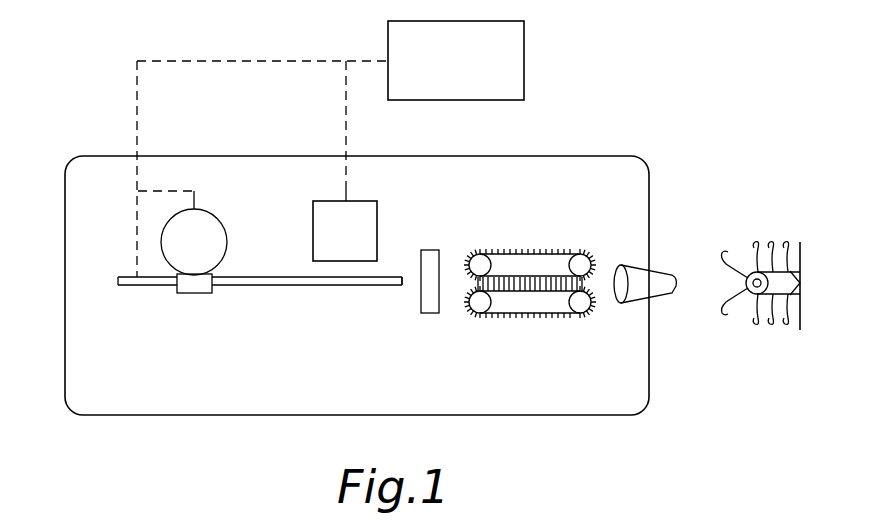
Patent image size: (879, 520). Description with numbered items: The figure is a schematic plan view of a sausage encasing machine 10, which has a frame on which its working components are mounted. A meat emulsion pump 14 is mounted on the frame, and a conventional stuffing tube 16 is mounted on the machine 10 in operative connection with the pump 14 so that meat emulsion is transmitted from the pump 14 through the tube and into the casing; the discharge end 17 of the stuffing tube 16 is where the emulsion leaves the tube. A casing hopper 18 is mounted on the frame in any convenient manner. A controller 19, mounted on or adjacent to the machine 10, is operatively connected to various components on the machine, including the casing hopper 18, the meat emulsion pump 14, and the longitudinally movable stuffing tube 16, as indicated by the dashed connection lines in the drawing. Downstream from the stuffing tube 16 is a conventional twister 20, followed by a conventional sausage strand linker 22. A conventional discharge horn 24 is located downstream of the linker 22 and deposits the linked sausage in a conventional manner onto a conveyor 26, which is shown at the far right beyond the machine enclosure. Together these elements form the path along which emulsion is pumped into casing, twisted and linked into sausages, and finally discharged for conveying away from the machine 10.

The sausage encasing machine 10 is at (62, 94).
The meat emulsion pump 14 is at (222, 215).
The stuffing tube 16 is at (272, 286).
The discharge end of the tube 17 is at (404, 281).
The casing hopper 18 is at (377, 219).
The controller 19 is at (524, 56).
The twister 20 is at (432, 314).
The sausage strand linker 22 is at (529, 250).
The discharge horn 24 is at (655, 271).
The conveyor 26 is at (804, 286).